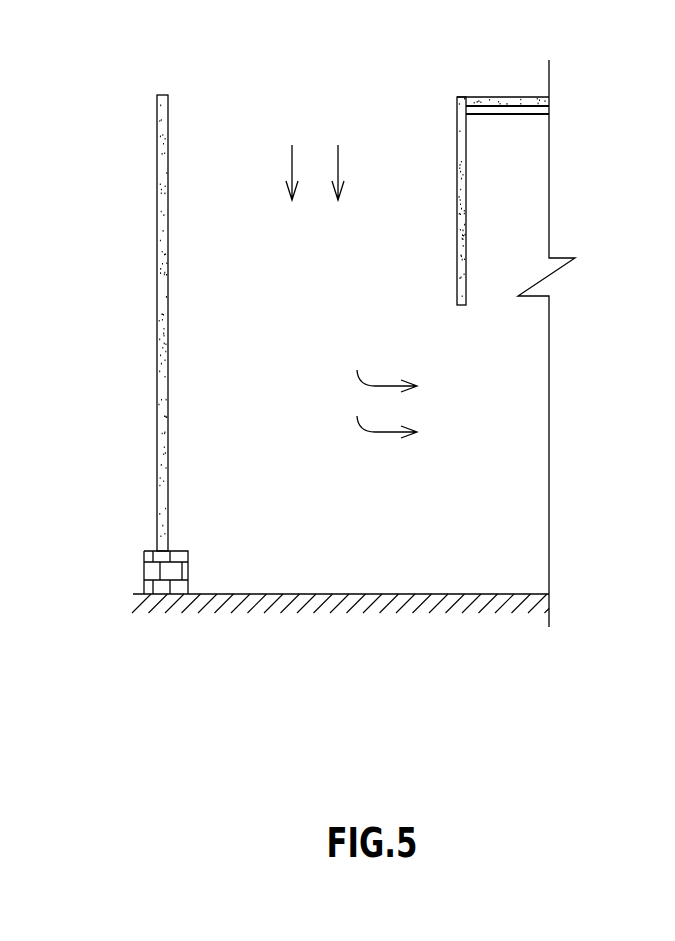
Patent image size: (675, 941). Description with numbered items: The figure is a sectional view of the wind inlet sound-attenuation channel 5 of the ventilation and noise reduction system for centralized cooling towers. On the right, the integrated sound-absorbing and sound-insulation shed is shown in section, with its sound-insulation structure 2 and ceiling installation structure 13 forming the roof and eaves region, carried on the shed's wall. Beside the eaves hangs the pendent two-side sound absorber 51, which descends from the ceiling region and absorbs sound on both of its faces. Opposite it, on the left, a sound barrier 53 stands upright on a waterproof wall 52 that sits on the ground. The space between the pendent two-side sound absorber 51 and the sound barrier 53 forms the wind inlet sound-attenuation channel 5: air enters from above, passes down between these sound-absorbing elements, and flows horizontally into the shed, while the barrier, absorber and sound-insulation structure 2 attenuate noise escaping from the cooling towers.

The sound-insulation structure 2 is at (612, 48).
The ceiling installation structure 13 is at (585, 182).
The pendent two-side sound absorber 51 is at (585, 226).
The wind inlet sound-attenuation channel 5 is at (78, 302).
The sound barrier 53 is at (125, 407).
The waterproof wall 52 is at (127, 665).